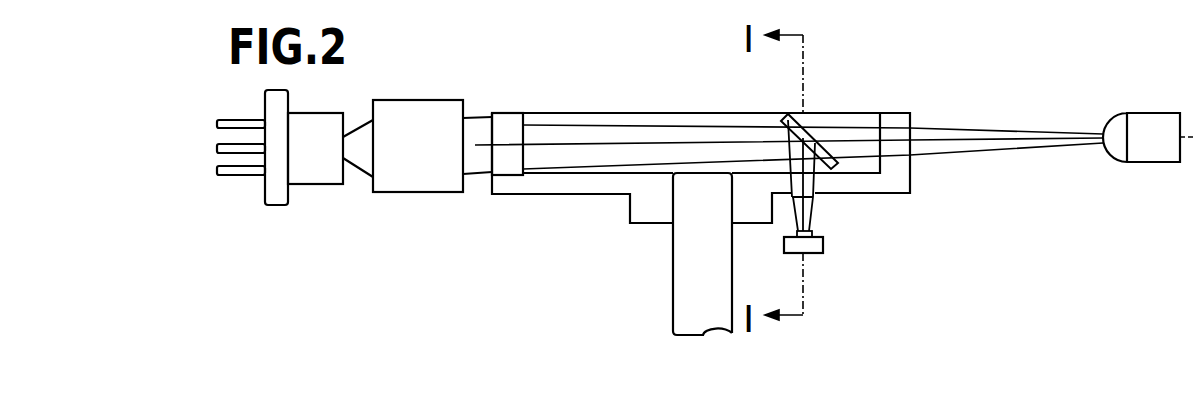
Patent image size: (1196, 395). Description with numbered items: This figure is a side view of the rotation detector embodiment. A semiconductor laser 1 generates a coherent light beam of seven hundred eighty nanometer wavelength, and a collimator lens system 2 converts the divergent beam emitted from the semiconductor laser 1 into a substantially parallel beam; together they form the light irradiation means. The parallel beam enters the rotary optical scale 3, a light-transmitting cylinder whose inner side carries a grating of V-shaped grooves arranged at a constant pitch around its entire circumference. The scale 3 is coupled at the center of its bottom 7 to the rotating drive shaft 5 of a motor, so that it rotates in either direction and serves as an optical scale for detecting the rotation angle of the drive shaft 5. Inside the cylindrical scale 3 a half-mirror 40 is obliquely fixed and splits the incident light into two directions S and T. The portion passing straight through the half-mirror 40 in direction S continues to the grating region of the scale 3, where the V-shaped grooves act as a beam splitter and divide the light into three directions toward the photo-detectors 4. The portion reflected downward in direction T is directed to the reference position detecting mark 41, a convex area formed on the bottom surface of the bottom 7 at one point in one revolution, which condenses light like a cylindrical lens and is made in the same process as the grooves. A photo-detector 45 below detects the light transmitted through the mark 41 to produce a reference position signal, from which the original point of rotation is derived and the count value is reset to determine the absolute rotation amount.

The semiconductor laser 1 is at (315, 184).
The collimator lens system 2 is at (415, 192).
The rotary optical scale 3 is at (507, 123).
The photo-detector 4 is at (1145, 113).
The drive shaft 5 is at (683, 277).
The bottom 7 is at (603, 182).
The half-mirror 40 is at (798, 115).
The reference position detecting mark 41 is at (813, 202).
The photo-detector 45 is at (813, 253).
The direction S is at (857, 137).
The direction T is at (803, 175).